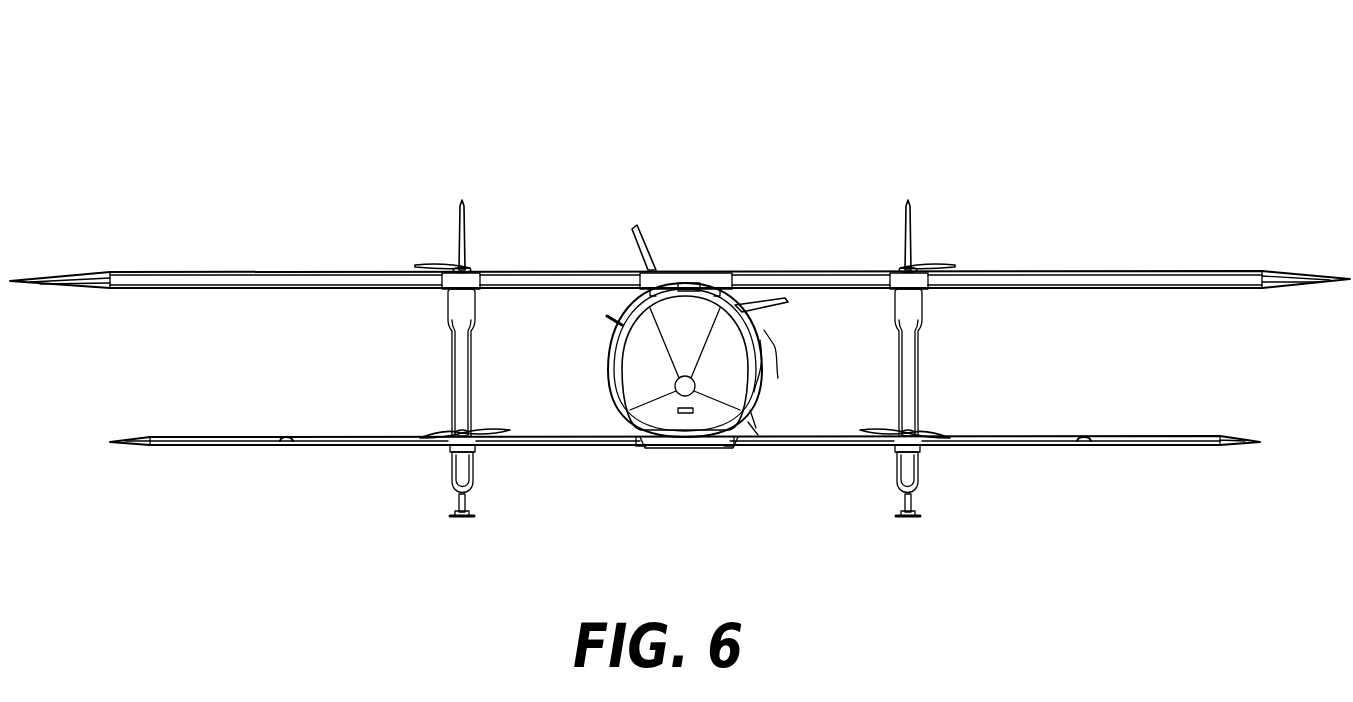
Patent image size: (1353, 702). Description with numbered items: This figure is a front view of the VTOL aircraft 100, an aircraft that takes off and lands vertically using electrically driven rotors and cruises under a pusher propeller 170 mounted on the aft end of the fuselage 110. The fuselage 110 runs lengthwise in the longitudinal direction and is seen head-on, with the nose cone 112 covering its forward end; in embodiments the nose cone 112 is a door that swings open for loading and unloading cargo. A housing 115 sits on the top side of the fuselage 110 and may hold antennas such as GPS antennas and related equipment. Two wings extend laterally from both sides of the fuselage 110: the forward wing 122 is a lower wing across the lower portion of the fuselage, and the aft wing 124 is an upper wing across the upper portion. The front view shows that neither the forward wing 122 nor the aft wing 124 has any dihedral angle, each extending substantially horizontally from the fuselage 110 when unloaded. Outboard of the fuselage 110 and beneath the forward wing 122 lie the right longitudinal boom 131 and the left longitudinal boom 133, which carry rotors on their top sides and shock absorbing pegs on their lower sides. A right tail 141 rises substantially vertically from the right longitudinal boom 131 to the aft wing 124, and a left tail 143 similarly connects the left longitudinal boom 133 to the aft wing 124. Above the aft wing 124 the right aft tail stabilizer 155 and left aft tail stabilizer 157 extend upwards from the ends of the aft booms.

The VTOL aircraft 100 is at (285, 112).
The fuselage 110 is at (612, 352).
The nose cone 112 is at (708, 407).
The housing 115 is at (712, 283).
The forward wing 122 is at (253, 447).
The aft wing 124 is at (210, 271).
The right longitudinal boom 131 is at (460, 480).
The left longitudinal boom 133 is at (906, 480).
The right tail 141 is at (458, 343).
The left tail 143 is at (906, 345).
The right aft tail stabilizer 155 is at (458, 202).
The left aft tail stabilizer 157 is at (906, 202).
The pusher propeller 170 is at (651, 238).